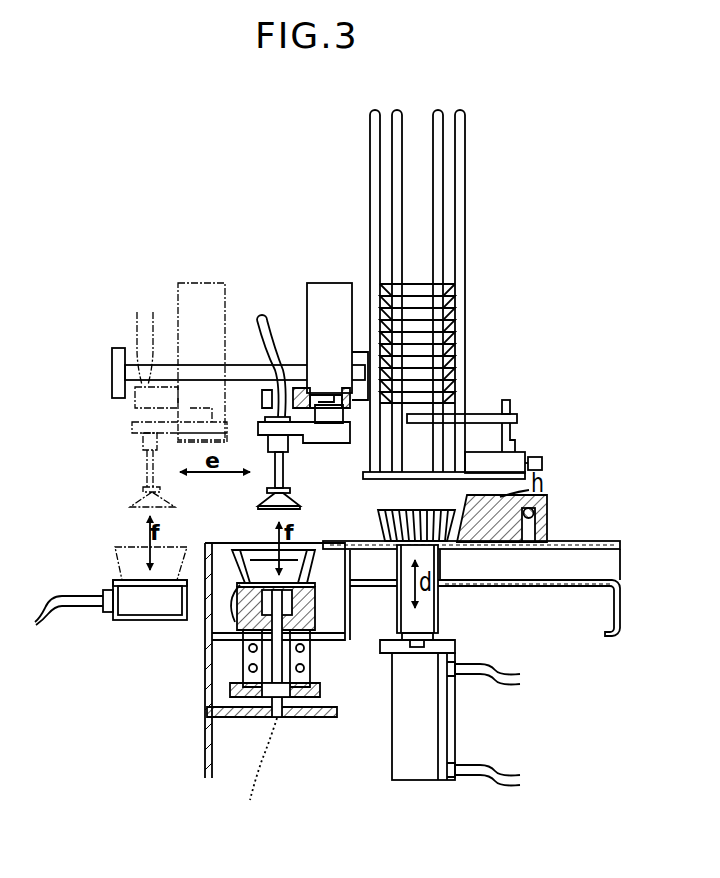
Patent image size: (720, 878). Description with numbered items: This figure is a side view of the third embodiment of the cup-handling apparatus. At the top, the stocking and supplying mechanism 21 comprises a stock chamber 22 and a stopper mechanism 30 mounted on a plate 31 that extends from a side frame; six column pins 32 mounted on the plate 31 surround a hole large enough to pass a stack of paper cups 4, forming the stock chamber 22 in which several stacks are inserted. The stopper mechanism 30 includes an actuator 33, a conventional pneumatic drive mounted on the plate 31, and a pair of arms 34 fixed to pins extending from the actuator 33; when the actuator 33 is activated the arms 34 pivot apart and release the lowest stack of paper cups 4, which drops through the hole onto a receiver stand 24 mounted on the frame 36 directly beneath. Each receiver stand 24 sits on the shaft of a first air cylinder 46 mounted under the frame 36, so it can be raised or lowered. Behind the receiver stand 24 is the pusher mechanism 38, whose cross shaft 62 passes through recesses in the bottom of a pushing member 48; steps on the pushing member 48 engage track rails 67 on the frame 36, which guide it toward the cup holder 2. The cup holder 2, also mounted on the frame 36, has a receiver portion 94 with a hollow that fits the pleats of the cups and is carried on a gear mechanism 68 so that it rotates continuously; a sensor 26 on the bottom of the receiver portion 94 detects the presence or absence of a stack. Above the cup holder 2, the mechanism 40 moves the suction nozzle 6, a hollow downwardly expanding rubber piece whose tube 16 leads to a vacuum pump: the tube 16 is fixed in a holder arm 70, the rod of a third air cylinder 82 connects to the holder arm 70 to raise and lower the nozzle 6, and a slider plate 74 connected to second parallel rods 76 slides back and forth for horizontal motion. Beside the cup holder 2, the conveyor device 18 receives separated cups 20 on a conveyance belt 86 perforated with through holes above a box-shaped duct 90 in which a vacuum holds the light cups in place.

The cup holder 2 is at (250, 543).
The stack of paper cups 4 is at (447, 337).
The suction nozzle 6 is at (262, 495).
The tube 16 is at (272, 345).
The conveyor device 18 is at (106, 623).
The cup 20 is at (120, 547).
The stocking and supplying mechanism 21 is at (487, 178).
The stock chamber 22 is at (431, 248).
The receiver stand 24 is at (438, 622).
The sensor 26 is at (318, 600).
The stopper mechanism 30 is at (523, 403).
The plate 31 is at (375, 479).
The column pin 32 is at (465, 297).
The actuator 33 is at (520, 452).
The arm 34 is at (480, 413).
The frame 36 is at (625, 592).
The pusher mechanism 38 is at (555, 490).
The mechanism for vertically and horizontally moving suction nozzles 40 is at (208, 255).
The first air cylinder 46 is at (445, 730).
The pushing member 48 is at (536, 522).
The cross shaft 62 is at (548, 502).
The track rail 67 is at (578, 542).
The gear mechanism 68 is at (227, 693).
The holder arm 70 is at (316, 444).
The slider plate 74 is at (240, 365).
The second parallel rod 76 is at (152, 350).
The third air cylinder 82 is at (325, 283).
The conveyance belt 86 is at (113, 582).
The duct 90 is at (135, 612).
The receiver portion 94 is at (238, 602).